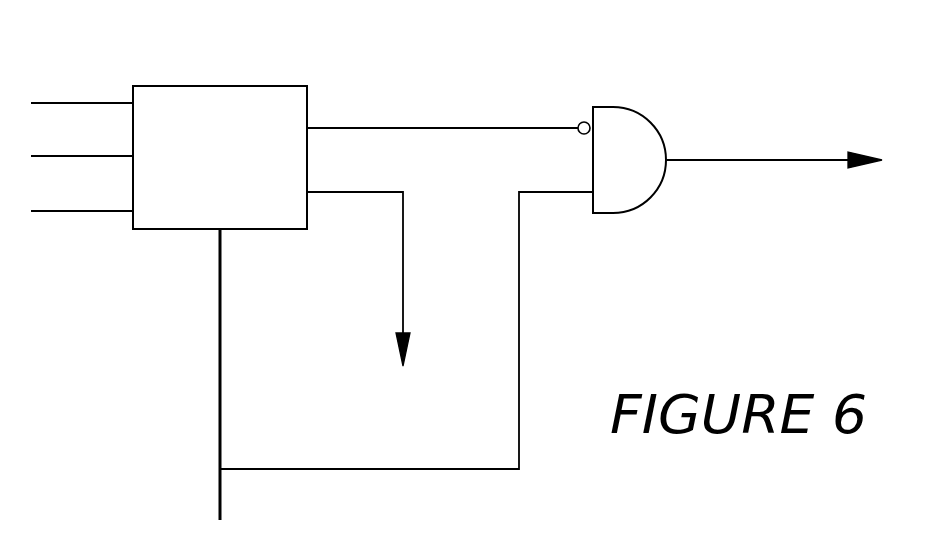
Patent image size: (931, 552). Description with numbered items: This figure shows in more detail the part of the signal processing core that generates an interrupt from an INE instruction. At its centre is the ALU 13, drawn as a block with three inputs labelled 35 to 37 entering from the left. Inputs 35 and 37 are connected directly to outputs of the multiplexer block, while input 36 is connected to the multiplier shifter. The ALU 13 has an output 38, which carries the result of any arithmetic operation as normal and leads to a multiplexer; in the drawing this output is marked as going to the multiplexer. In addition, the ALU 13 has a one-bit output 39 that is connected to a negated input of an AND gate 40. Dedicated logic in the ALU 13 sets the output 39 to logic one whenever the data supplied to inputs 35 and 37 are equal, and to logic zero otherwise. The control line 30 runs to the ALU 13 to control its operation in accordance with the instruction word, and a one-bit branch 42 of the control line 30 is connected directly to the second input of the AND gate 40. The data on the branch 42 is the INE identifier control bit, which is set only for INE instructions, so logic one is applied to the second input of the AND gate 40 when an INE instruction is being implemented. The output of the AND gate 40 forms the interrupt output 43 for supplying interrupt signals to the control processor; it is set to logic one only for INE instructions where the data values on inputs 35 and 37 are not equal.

The ALU 13 is at (155, 83).
The control line 30 is at (217, 313).
The ALU input 35 is at (53, 102).
The ALU input 36 is at (50, 155).
The ALU input 37 is at (50, 210).
The ALU output 38 is at (328, 191).
The one-bit output 39 is at (330, 127).
The AND gate 40 is at (638, 123).
The one-bit branch 42 is at (310, 470).
The interrupt output 43 is at (733, 162).